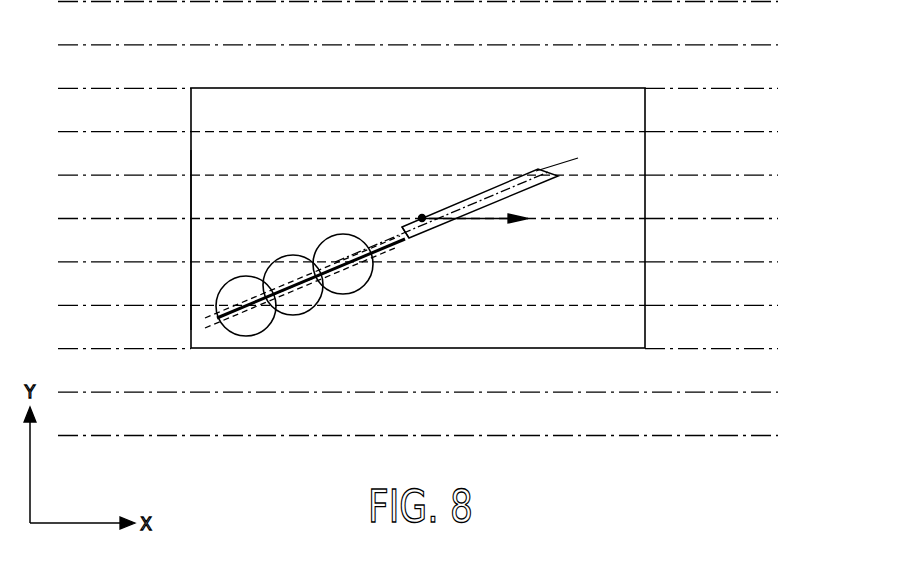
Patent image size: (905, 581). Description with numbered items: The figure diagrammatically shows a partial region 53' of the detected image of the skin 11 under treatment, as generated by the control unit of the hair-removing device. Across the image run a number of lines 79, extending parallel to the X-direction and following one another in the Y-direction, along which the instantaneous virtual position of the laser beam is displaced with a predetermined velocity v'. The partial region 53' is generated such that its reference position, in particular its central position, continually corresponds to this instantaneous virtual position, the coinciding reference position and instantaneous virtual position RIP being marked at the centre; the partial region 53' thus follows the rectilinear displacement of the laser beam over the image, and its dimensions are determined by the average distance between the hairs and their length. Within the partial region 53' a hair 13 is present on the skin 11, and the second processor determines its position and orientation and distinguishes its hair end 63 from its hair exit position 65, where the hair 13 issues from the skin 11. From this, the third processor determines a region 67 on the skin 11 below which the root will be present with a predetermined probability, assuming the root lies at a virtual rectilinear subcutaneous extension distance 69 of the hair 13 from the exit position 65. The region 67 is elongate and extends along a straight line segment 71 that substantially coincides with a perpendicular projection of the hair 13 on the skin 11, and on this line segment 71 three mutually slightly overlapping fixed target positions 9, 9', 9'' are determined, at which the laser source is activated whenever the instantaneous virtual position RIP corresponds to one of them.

The skin 11 is at (466, 105).
The lines 79 is at (770, 175).
The partial region 53' is at (161, 240).
The straight line segment 71 is at (348, 277).
The target position 9 is at (260, 311).
The target position 9' is at (311, 291).
The target position 9'' is at (374, 264).
The region 67 is at (291, 266).
The hair 13 is at (515, 193).
The virtual rectilinear subcutaneous extension distance 69 is at (377, 232).
The hair exit position 65 is at (402, 228).
The hair end 63 is at (542, 170).
The reference position R and instantaneous virtual position IP RIP is at (422, 215).
The predetermined velocity v' is at (477, 230).